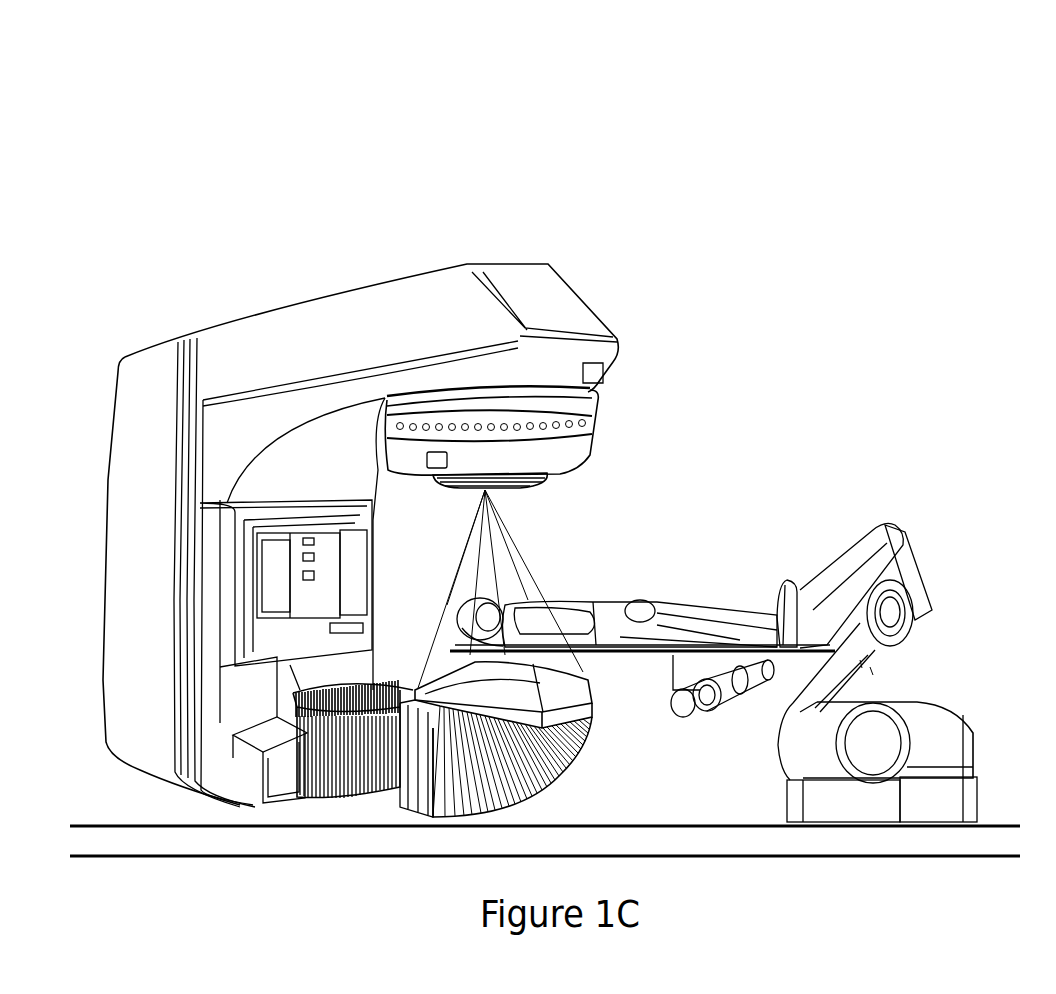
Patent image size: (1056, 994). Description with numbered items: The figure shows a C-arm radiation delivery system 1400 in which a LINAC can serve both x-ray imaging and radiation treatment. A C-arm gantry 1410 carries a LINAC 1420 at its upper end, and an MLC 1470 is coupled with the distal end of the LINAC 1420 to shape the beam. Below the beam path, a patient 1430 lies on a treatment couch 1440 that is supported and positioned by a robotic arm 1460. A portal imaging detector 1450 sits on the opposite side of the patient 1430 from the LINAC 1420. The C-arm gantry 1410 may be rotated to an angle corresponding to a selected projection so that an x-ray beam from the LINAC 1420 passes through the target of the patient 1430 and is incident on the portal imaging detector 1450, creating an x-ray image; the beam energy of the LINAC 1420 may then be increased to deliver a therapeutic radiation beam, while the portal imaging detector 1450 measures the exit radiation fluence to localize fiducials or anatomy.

The C-arm radiation delivery system 1400 is at (542, 44).
The C-arm gantry 1410 is at (347, 297).
The LINAC 1420 is at (590, 430).
The patient 1430 is at (470, 600).
The treatment couch 1440 is at (455, 658).
The portal imaging detector 1450 is at (590, 690).
The robotic arm 1460 is at (913, 543).
The MLC 1470 is at (512, 484).